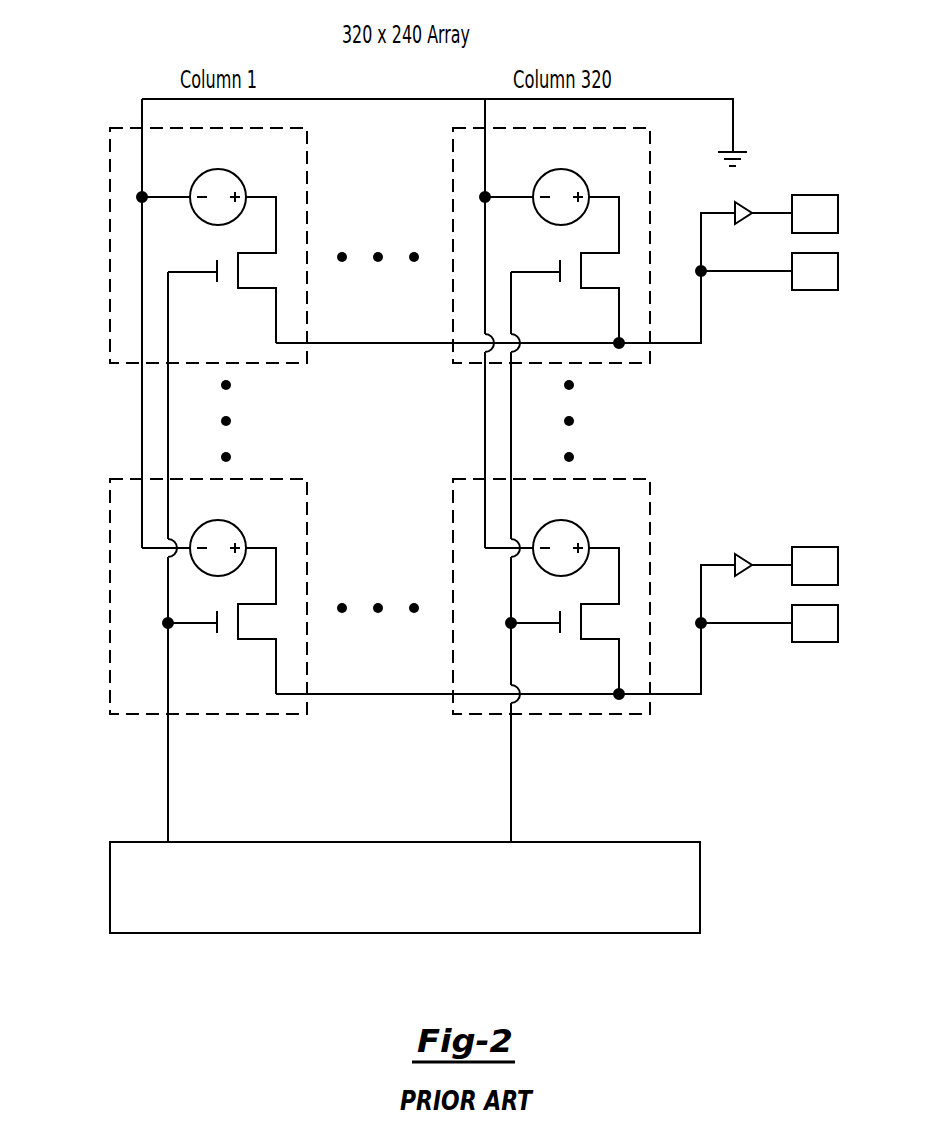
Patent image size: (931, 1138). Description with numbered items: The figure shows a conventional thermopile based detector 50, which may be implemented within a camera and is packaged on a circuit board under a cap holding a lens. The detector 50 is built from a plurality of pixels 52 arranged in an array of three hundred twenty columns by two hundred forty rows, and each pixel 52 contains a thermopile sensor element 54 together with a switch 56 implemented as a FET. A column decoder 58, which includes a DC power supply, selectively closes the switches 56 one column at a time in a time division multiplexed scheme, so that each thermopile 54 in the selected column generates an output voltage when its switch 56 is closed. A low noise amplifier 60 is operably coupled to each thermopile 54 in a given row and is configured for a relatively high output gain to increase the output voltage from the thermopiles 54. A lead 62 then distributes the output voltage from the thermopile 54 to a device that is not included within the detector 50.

The thermopile based detector 50 is at (747, 46).
The pixel 52 is at (110, 147).
The thermopile sensor element 54 is at (248, 178).
The switch 56 is at (254, 289).
The column decoder 58 is at (406, 842).
The low noise amplifier 60 is at (745, 205).
The lead 62 is at (748, 273).